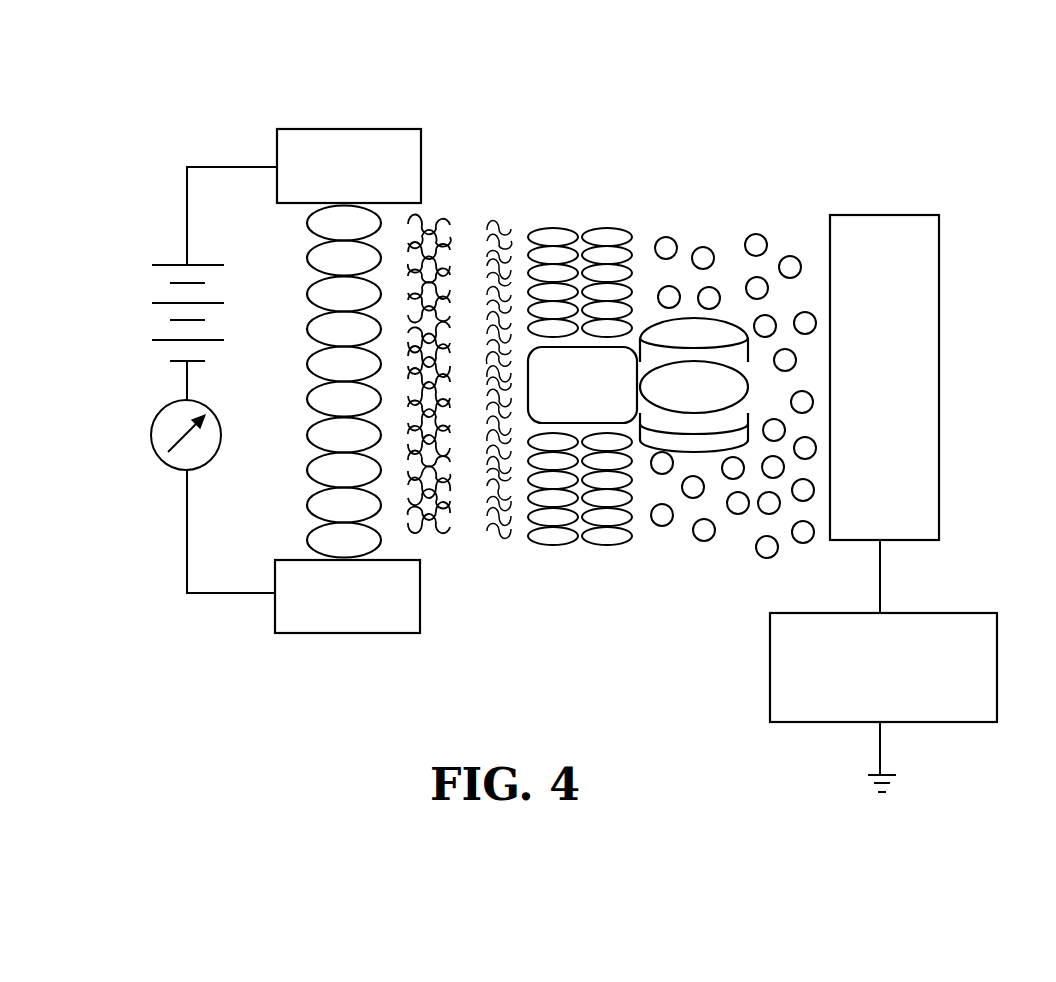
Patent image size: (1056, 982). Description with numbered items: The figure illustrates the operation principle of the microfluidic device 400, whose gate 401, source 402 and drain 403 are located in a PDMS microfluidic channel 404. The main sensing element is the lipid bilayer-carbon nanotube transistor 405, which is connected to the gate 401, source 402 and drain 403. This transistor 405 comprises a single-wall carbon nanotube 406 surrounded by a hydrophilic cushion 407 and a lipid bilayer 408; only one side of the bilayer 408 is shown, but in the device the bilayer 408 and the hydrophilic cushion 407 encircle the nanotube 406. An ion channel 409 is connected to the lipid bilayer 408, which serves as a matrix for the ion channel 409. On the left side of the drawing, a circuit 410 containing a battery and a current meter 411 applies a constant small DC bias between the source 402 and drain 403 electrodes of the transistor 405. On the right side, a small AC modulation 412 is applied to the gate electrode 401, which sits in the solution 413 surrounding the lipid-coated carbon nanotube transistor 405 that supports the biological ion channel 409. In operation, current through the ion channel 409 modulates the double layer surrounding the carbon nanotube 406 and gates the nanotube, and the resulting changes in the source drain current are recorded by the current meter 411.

The microfluidic device 400 is at (796, 102).
The gate 401 is at (903, 403).
The source 402 is at (345, 127).
The drain 403 is at (353, 634).
The PDMS microfluidic channel 404 is at (587, 578).
The lipid bilayer-carbon nanotube transistor 405 is at (224, 144).
The single-wall carbon nanotube 406 is at (310, 487).
The hydrophilic cushion 407 is at (437, 227).
The lipid bilayer 408 is at (573, 226).
The ion channel 409 is at (600, 402).
The circuit 410 is at (185, 243).
The current meter 411 is at (150, 450).
The AC modulation 412 is at (770, 690).
The solution 413 is at (764, 555).